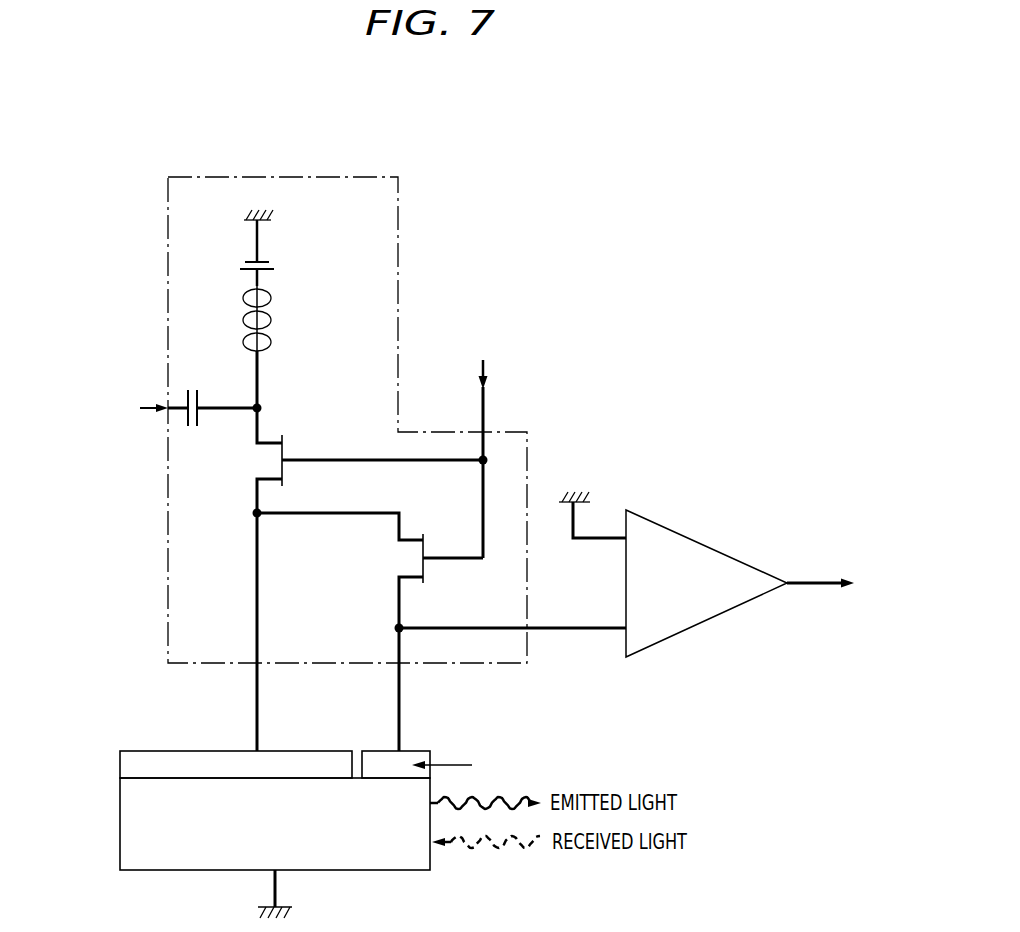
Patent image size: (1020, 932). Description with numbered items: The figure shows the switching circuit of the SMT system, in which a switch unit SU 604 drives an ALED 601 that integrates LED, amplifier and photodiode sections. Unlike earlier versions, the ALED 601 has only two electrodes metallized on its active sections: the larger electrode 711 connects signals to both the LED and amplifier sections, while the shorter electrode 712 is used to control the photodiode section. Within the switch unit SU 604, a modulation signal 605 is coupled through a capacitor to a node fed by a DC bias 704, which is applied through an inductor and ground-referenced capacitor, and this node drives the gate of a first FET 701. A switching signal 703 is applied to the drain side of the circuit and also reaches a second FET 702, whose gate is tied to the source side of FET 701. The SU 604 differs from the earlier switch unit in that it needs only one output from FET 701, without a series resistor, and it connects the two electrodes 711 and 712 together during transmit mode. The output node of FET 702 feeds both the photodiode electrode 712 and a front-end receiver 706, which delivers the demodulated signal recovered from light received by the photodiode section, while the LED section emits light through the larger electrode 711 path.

The switch unit 604 is at (398, 208).
The DC bias 704 is at (296, 309).
The modulation signal 605 is at (145, 424).
The FET 701 is at (283, 451).
The switching signal 703 is at (484, 412).
The FET 702 is at (425, 568).
The front-end receiver 706 is at (707, 543).
The ALED 601 is at (120, 823).
The larger electrode 711 is at (166, 751).
The shorter electrode 712 is at (381, 751).